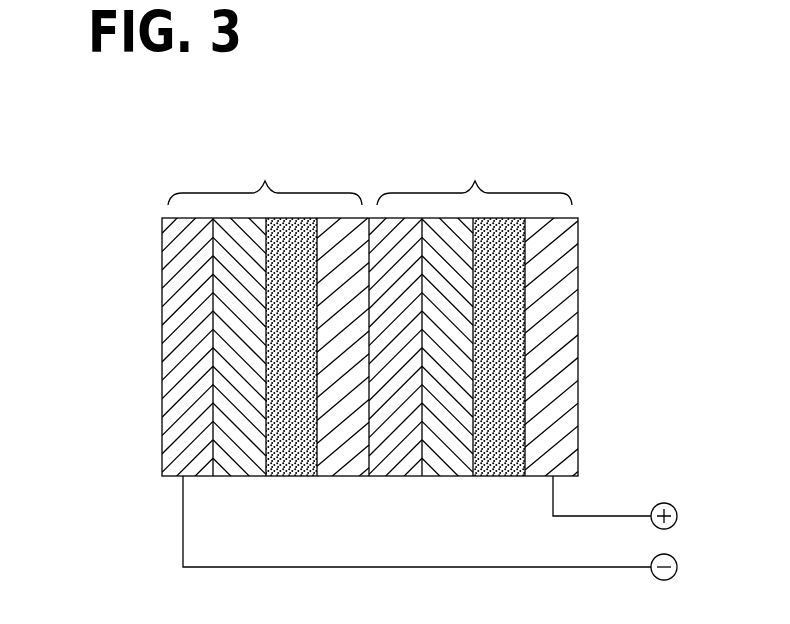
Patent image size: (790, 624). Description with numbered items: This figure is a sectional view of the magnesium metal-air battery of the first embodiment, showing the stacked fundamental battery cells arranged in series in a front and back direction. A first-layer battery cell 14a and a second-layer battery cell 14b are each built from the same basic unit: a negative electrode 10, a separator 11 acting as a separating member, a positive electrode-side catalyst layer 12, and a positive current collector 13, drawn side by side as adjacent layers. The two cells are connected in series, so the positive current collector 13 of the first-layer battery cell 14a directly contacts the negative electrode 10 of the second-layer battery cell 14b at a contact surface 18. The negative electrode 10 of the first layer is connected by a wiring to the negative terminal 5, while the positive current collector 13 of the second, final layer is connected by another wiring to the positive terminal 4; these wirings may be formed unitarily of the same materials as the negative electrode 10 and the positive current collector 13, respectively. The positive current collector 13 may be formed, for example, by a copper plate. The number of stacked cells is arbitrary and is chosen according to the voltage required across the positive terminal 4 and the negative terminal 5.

The negative electrode 10 is at (166, 436).
The separator 11 is at (232, 388).
The positive electrode-side catalyst layer 12 is at (295, 338).
The positive current collector 13 is at (337, 272).
The battery cell of the first layer 14a is at (265, 173).
The battery cell of the second layer 14b is at (474, 173).
The contact surface 18 is at (365, 433).
The positive terminal 4 is at (673, 506).
The negative terminal 5 is at (673, 558).